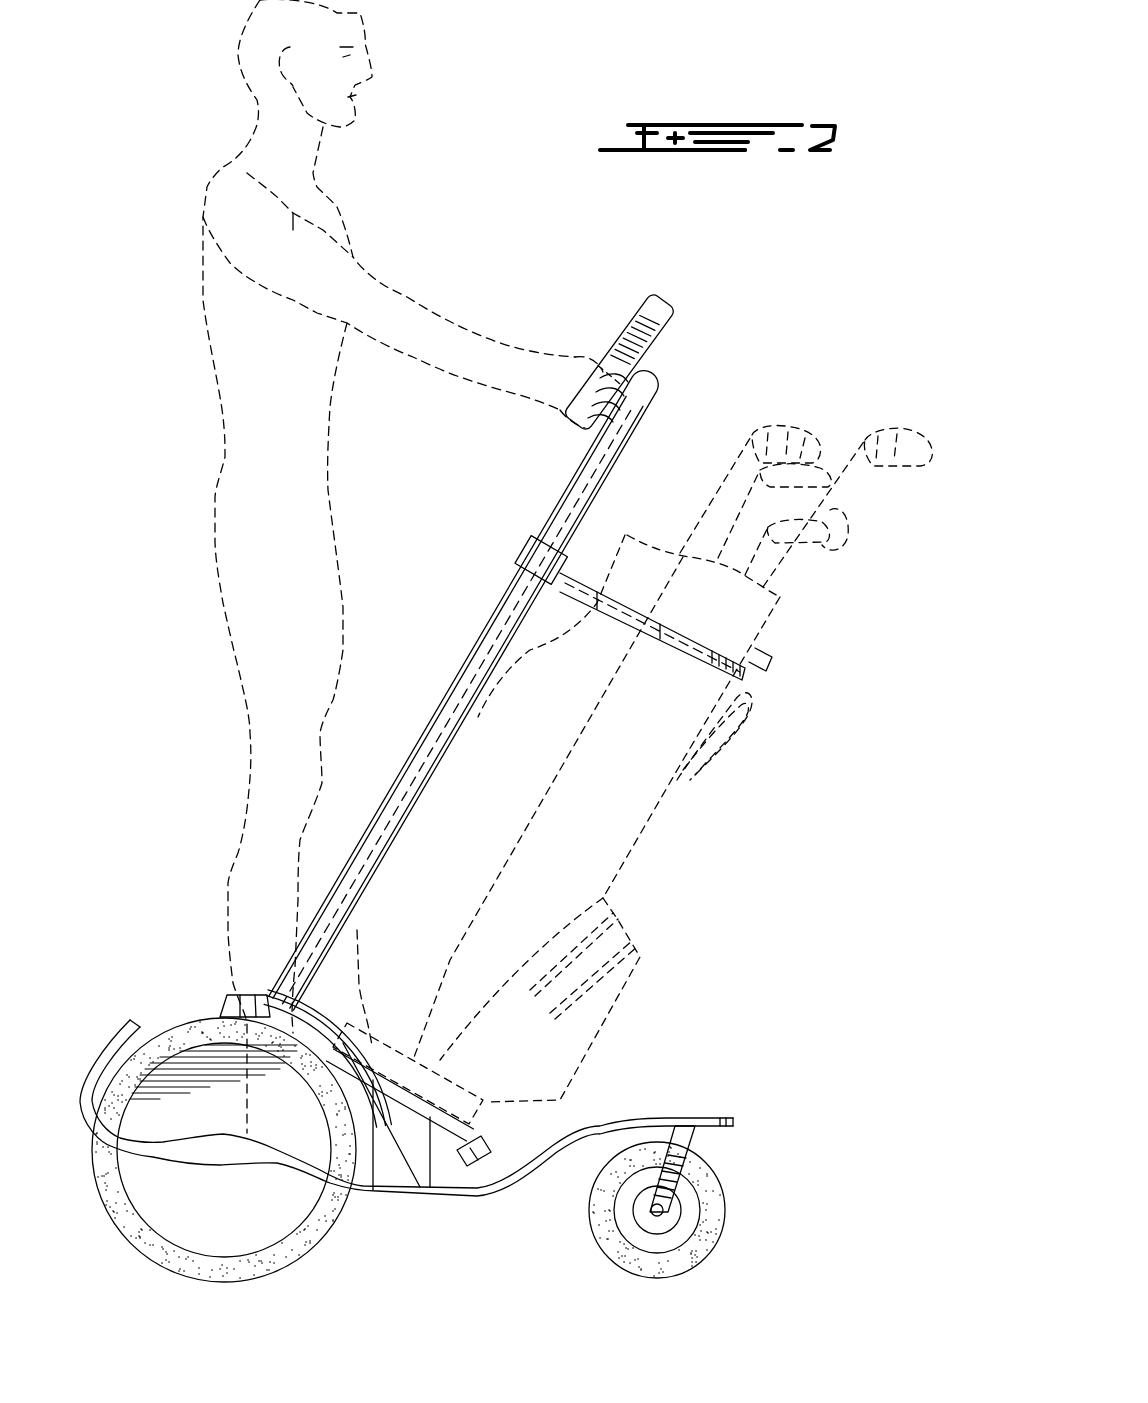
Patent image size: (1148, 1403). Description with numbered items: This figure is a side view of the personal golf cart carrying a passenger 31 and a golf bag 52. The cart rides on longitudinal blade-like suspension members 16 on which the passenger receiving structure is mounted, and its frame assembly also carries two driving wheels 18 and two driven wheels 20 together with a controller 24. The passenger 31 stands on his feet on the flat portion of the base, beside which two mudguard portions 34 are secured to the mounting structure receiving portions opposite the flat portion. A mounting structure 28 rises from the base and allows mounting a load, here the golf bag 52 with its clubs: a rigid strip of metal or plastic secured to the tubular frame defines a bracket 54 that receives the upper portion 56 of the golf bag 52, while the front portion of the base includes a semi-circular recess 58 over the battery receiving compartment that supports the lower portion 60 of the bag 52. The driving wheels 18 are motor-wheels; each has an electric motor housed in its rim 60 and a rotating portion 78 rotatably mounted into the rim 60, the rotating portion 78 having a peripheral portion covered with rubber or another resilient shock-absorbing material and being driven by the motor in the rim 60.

The suspension members 16 is at (552, 1150).
The driving wheels 18 is at (352, 1230).
The driven wheels 20 is at (740, 1223).
The controller 24 is at (673, 288).
The mounting structure 28 is at (457, 647).
The passenger 31 is at (240, 558).
The mudguard portions 34 is at (216, 995).
The golf bag 52 is at (630, 822).
The bracket 54 is at (578, 562).
The upper portion 56 is at (770, 633).
The semi-circular recess 58 is at (465, 1167).
The lower portion 60 is at (495, 1130).
The rotating portion 78 is at (313, 1230).